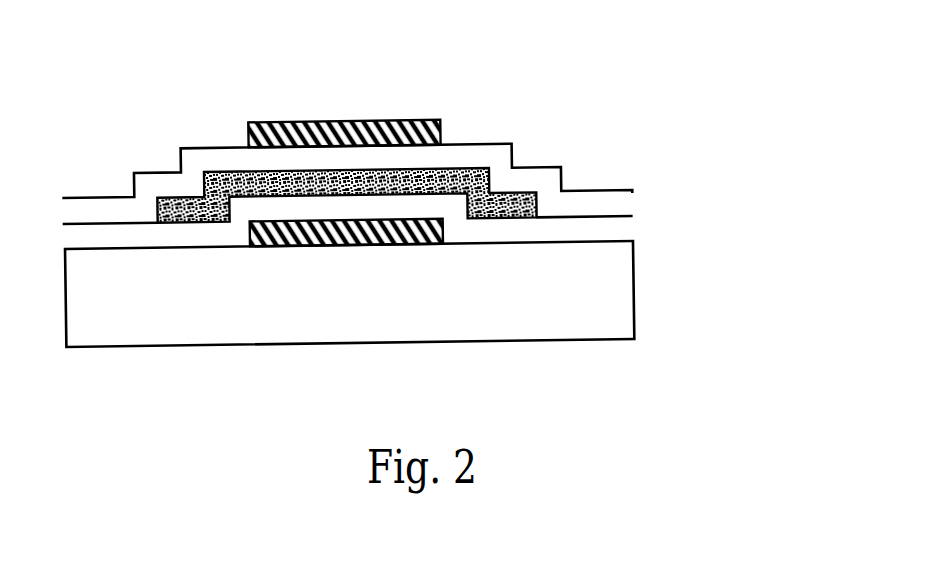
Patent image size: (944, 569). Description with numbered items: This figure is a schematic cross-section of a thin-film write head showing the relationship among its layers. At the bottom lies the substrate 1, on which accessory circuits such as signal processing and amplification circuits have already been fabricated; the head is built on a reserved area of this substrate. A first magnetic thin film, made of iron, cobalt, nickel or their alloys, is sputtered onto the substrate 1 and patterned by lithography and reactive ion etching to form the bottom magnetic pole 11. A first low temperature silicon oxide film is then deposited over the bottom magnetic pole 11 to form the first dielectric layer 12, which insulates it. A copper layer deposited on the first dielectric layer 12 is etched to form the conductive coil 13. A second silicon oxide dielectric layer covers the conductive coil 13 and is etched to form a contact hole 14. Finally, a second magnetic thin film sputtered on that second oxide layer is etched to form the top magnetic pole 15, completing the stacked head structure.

The substrate 1 is at (362, 317).
The bottom magnetic pole 11 is at (452, 238).
The first dielectric layer 12 is at (614, 230).
The conductive coil 13 is at (479, 177).
The contact hole 14 is at (615, 203).
The top magnetic pole 15 is at (450, 124).